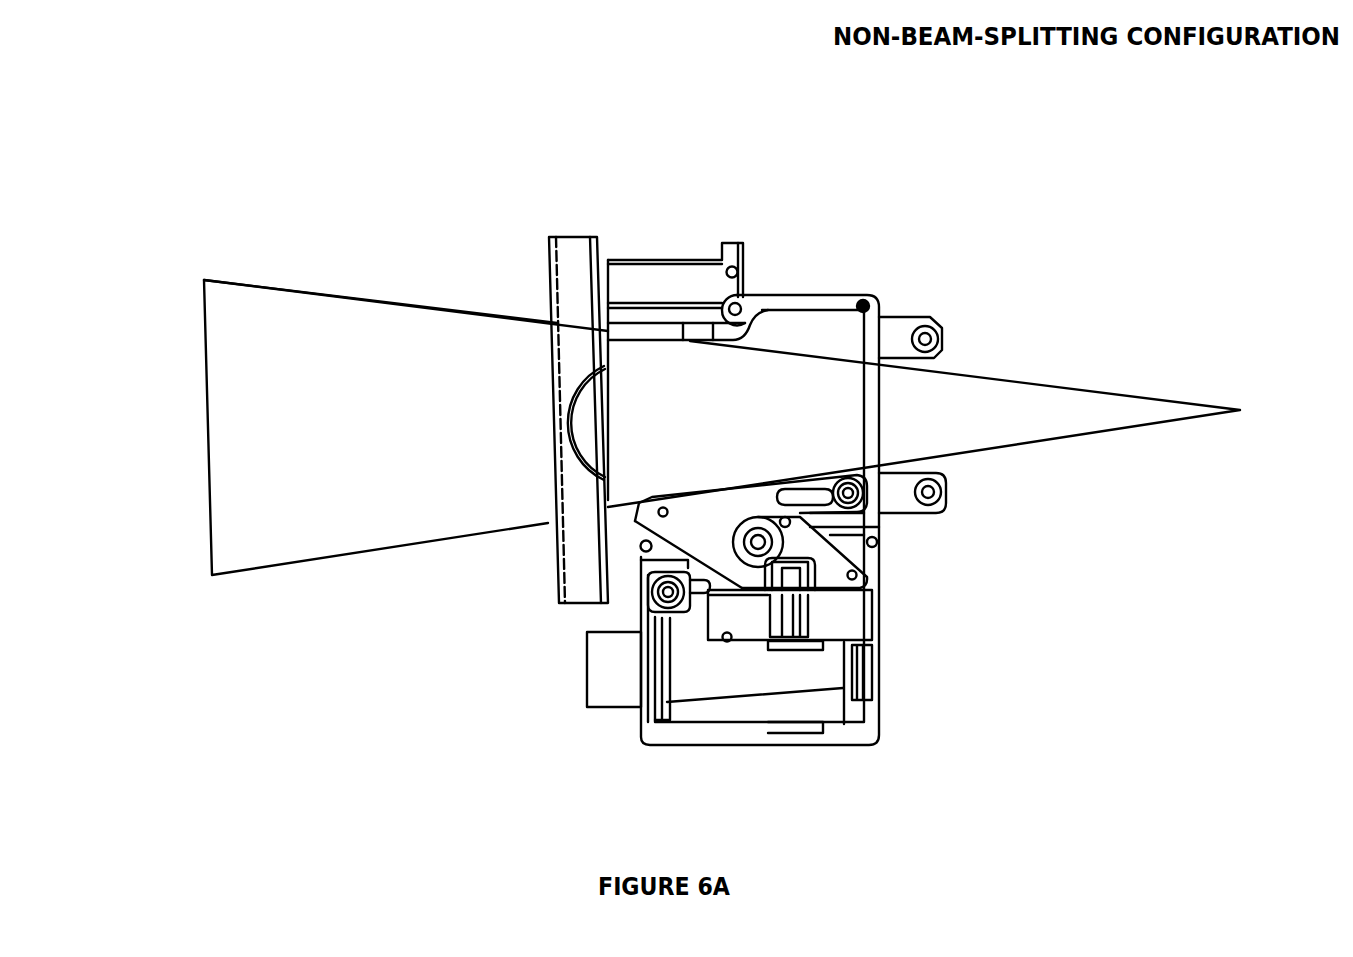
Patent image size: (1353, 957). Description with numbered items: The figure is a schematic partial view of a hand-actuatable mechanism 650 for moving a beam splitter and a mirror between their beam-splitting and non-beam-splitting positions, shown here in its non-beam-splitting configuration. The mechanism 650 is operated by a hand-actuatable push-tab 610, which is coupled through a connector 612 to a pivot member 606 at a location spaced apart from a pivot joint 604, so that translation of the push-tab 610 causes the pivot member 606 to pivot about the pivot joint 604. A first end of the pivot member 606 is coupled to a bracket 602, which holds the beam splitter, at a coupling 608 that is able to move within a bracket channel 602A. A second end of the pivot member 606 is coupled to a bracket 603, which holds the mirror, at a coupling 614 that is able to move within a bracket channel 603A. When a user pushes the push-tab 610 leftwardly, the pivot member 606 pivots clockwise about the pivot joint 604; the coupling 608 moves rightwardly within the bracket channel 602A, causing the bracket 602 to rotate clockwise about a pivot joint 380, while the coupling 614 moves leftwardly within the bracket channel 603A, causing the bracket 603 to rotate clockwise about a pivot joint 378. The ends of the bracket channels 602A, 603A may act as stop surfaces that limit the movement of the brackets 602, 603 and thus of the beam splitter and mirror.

The hand-actuatable mechanism 650 is at (284, 216).
The pivot member 606 is at (705, 513).
The bracket 602 is at (868, 474).
The bracket channel 602A is at (805, 488).
The coupling 608 is at (663, 508).
The pivot joint 380 is at (857, 483).
The coupling 614 is at (857, 575).
The pivot joint 604 is at (870, 522).
The push-tab 610 is at (840, 607).
The connector 612 is at (785, 558).
The bracket 603 is at (640, 547).
The pivot joint 378 is at (652, 592).
The bracket channel 603A is at (700, 592).